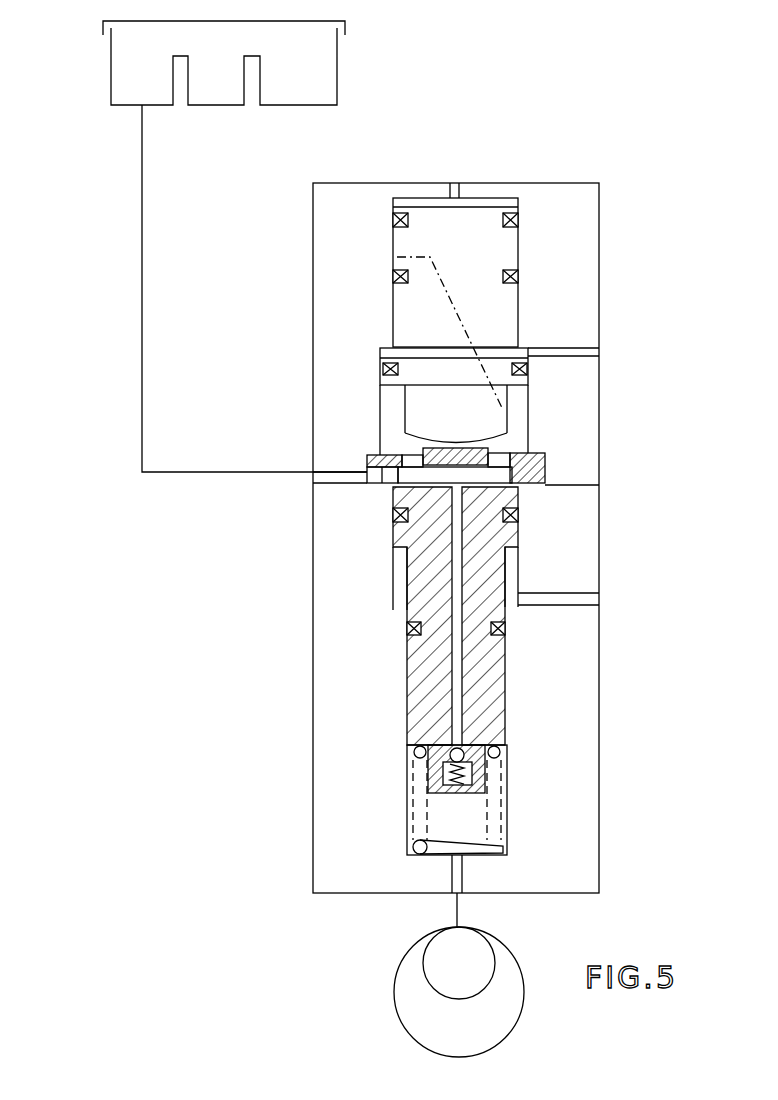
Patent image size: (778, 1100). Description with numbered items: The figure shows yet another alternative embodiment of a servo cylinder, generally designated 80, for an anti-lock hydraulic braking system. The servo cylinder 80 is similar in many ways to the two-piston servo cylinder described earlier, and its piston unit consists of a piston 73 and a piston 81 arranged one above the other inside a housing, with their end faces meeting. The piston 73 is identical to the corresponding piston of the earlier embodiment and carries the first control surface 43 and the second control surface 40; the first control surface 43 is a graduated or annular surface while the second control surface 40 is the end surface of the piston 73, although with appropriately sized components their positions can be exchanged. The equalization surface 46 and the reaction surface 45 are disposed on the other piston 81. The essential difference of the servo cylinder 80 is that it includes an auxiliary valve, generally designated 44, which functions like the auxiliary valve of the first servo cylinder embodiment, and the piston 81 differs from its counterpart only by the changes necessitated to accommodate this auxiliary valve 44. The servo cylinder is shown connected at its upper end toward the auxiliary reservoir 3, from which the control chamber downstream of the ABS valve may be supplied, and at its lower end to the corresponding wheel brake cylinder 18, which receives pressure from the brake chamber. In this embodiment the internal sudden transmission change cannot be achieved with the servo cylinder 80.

The auxiliary reservoir 3 is at (355, 72).
The second control surface 40 is at (478, 207).
The piston 73 is at (467, 248).
The first control surface 43 is at (480, 345).
The servo cylinder 80 is at (307, 504).
The equalization surface 46 is at (518, 556).
The piston 81 is at (480, 655).
The auxiliary valve 44 is at (425, 765).
The reaction surface 45 is at (507, 768).
The wheel brake cylinder 18 is at (458, 958).